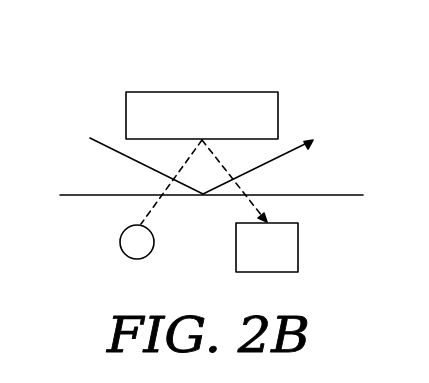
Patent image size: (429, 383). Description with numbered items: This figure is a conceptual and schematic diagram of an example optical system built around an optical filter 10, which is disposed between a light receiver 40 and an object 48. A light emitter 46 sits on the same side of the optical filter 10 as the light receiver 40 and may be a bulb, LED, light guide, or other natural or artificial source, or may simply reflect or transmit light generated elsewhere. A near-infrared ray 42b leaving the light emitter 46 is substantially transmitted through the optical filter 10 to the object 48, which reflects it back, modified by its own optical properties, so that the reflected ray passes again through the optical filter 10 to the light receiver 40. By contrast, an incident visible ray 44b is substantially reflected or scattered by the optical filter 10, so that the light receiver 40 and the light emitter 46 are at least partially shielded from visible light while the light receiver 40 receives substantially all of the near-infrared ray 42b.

The optical filter 10 is at (327, 197).
The light receiver 40 is at (298, 265).
The near-infrared ray 42b is at (167, 189).
The incident visible ray 44b is at (282, 156).
The light emitter 46 is at (119, 241).
The object 48 is at (242, 92).